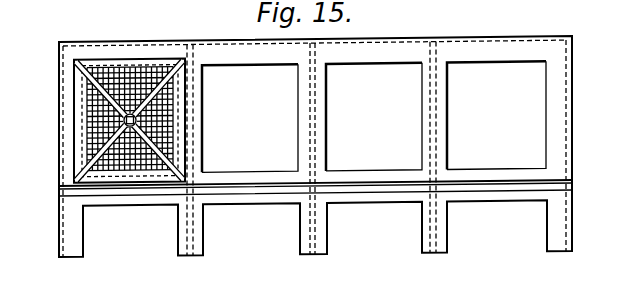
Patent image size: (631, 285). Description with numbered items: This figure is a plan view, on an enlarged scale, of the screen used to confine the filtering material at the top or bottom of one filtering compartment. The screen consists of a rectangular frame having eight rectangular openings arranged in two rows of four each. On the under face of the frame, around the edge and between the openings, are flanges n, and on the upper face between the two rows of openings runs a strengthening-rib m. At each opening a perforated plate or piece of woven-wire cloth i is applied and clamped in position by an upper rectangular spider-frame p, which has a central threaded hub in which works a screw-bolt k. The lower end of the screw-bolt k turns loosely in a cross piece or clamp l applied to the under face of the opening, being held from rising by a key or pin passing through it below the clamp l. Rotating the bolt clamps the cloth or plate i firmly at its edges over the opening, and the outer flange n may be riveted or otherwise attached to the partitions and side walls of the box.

The perforated plate or piece of woven-wire cloth i is at (117, 71).
The upper rectangular spider-frame p is at (87, 88).
The cross piece or clamp l is at (123, 118).
The screw-bolt k is at (92, 142).
The flanges n is at (372, 42).
The strengthening-rib m is at (375, 182).